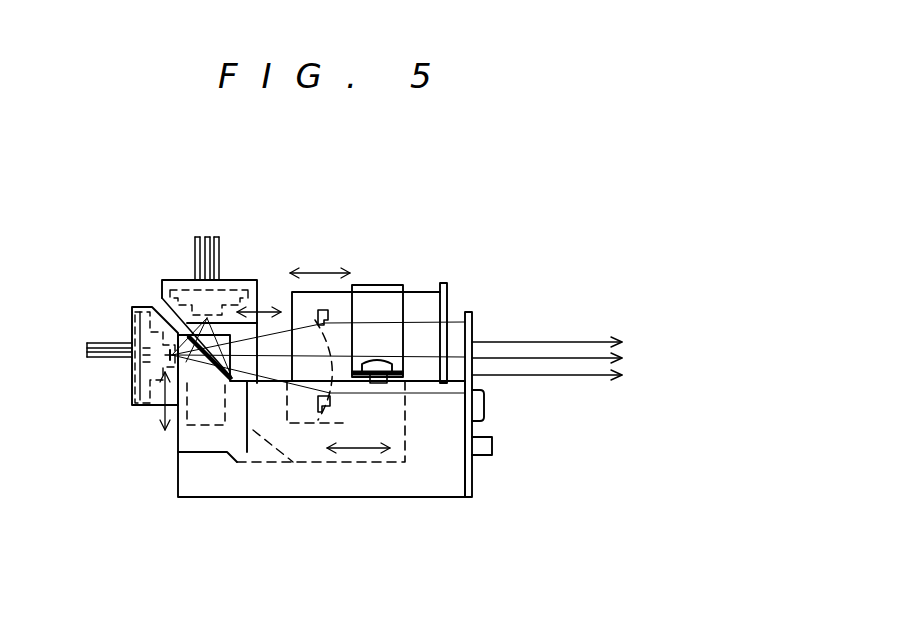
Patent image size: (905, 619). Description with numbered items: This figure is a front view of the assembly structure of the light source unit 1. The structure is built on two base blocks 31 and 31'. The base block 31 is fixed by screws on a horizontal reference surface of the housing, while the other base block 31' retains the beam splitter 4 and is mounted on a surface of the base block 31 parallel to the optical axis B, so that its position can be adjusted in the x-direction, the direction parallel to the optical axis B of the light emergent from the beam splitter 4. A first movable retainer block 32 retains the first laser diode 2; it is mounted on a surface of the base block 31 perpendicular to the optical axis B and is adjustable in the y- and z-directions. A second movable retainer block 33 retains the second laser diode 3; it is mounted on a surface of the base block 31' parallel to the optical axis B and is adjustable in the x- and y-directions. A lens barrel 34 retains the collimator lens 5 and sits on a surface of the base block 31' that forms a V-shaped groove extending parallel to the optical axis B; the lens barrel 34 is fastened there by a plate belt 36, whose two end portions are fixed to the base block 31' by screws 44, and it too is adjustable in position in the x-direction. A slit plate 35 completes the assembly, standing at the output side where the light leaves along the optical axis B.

The light source unit 1 is at (430, 165).
The first laser diode 2 is at (272, 213).
The second laser diode 3 is at (232, 277).
The beam splitter 4 is at (205, 383).
The collimator lens 5 is at (295, 420).
The base block 31 is at (321, 450).
The base block 31' is at (321, 473).
The first movable retainer block 32 is at (160, 378).
The second movable retainer block 33 is at (277, 240).
The lens barrel 34 is at (418, 308).
The slit plate 35 is at (468, 323).
The plate belt 36 is at (373, 283).
The screws 44 is at (377, 363).
The optical axis B is at (543, 358).